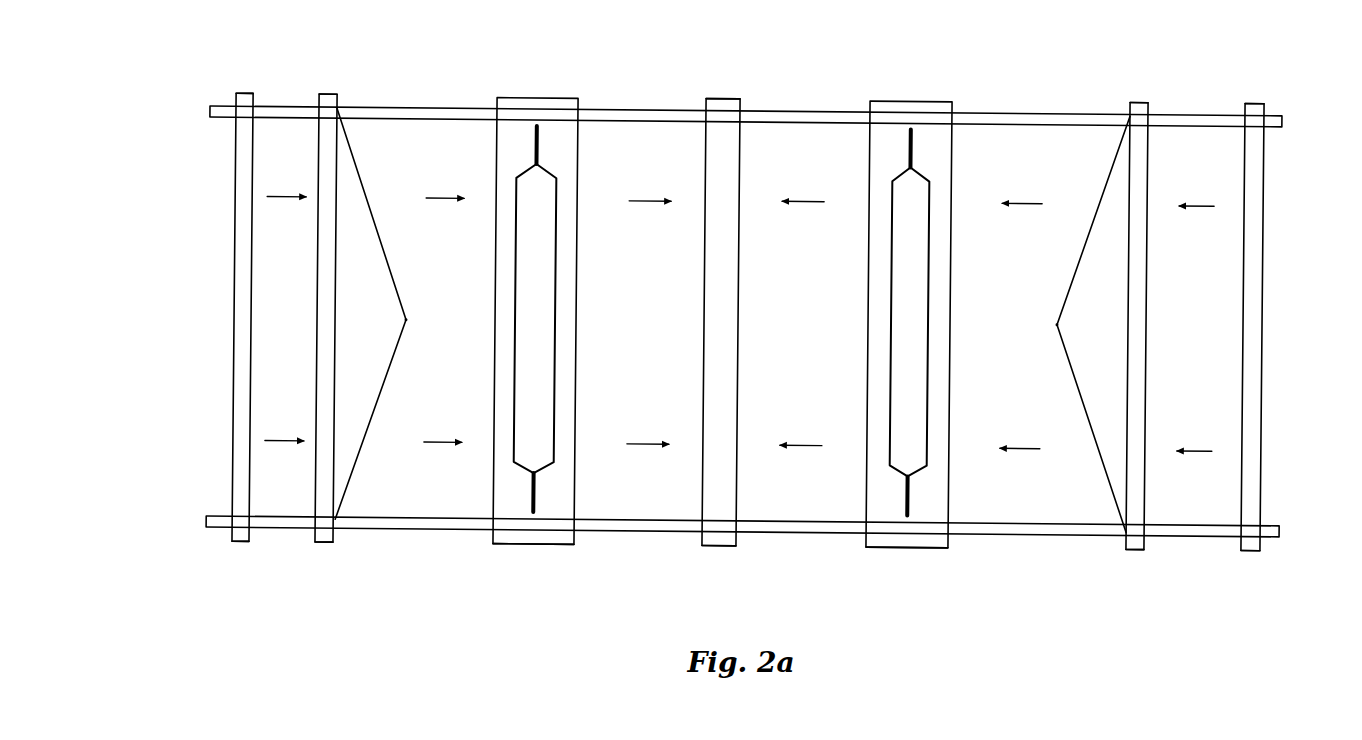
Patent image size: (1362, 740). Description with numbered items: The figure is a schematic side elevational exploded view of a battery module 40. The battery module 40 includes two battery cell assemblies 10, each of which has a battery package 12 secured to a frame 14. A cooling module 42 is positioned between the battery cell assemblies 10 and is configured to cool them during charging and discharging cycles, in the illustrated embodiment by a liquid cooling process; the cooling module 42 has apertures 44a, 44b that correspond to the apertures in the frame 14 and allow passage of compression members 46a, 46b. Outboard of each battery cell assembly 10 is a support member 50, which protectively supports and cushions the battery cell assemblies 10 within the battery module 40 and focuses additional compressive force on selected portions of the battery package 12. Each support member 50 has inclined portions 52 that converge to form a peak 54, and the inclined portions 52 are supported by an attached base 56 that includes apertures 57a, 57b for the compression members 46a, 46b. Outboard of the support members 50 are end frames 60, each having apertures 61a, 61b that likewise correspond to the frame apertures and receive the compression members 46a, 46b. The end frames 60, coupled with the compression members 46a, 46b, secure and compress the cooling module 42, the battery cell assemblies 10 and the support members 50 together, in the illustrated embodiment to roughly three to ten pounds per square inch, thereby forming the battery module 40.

The battery module 40 is at (1086, 16).
The battery cell assembly 10 is at (527, 95).
The battery package 12 is at (557, 340).
The frame 14 is at (578, 542).
The cooling module 42 is at (740, 282).
The aperture 44a is at (742, 532).
The aperture 44b is at (738, 108).
The compression member 46a is at (433, 528).
The compression member 46b is at (395, 106).
The support member 50 is at (368, 191).
The inclined portion 52 is at (391, 265).
The peak 54 is at (411, 319).
The base 56 is at (320, 320).
The aperture 57a is at (310, 527).
The aperture 57b is at (320, 105).
The end frame 60 is at (236, 283).
The aperture 61a is at (236, 527).
The aperture 61b is at (236, 104).